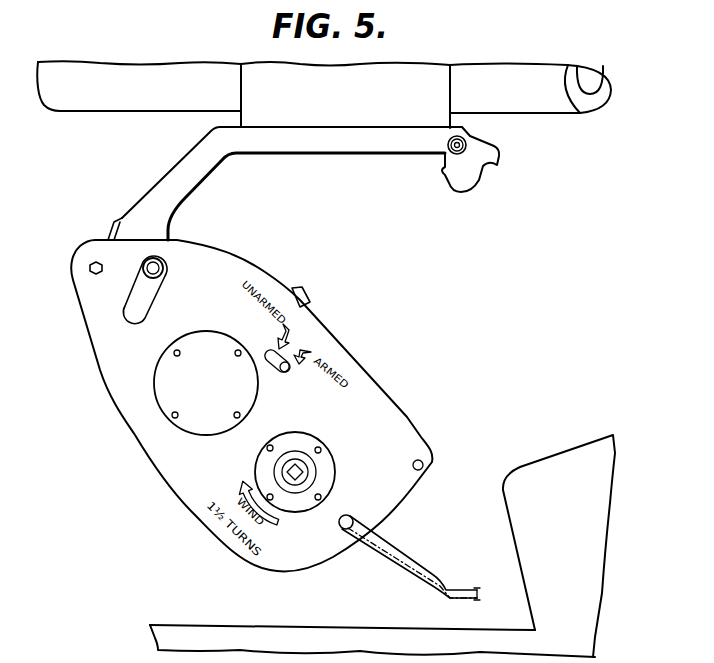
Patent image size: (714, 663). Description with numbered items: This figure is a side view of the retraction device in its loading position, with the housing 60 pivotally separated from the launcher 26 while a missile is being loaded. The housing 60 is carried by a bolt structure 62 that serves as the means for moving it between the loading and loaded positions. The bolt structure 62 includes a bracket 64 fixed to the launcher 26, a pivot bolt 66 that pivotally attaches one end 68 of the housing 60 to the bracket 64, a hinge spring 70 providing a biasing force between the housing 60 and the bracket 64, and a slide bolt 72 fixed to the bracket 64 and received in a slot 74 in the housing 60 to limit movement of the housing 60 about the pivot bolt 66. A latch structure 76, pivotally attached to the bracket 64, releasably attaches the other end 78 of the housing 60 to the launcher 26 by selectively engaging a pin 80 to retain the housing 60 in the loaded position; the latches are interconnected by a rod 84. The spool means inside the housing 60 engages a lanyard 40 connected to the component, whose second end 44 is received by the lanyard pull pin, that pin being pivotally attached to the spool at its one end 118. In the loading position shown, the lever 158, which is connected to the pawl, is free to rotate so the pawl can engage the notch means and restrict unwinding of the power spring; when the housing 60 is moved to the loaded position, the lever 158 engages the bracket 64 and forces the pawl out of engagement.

The launcher 26 is at (596, 105).
The lanyard 40 is at (442, 580).
The second end of lanyard 44 is at (353, 517).
The housing 60 is at (123, 402).
The bolt structure 62 is at (92, 201).
The bracket 64 is at (213, 157).
The pivot bolt 66 is at (89, 271).
The one end of housing 68 is at (92, 300).
The hinge spring 70 is at (118, 215).
The slide bolt 72 is at (161, 261).
The slot 74 is at (151, 300).
The latch structure 76 is at (471, 184).
The other end of housing 78 is at (407, 417).
The pin 80 is at (413, 463).
The rod 84 is at (467, 138).
The one end of lanyard pull pin 118 is at (341, 534).
The lever 158 is at (312, 293).